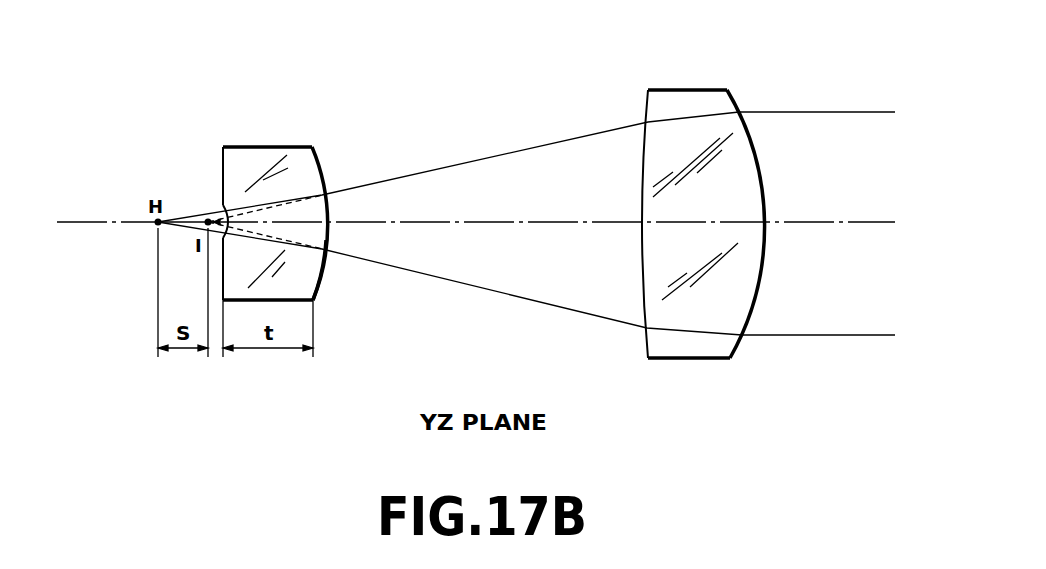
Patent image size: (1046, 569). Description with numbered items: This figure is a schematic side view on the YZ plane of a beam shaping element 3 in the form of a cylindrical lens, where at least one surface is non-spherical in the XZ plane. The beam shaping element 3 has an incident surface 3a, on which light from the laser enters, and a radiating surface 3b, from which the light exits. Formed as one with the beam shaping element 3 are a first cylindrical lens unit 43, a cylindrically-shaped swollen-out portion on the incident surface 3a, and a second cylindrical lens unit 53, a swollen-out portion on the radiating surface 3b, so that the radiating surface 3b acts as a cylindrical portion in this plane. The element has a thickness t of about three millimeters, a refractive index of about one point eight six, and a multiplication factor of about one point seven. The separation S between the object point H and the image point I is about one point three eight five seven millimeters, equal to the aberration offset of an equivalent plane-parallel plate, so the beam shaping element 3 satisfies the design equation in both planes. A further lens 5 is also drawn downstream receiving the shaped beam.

The beam shaping element 3 is at (270, 152).
The incident surface 3a is at (222, 168).
The radiating surface 3b is at (322, 168).
The first cylindrical lens unit 43 is at (222, 208).
The second cylindrical lens unit 53 is at (322, 285).
The lens (second lens) 5 is at (723, 102).